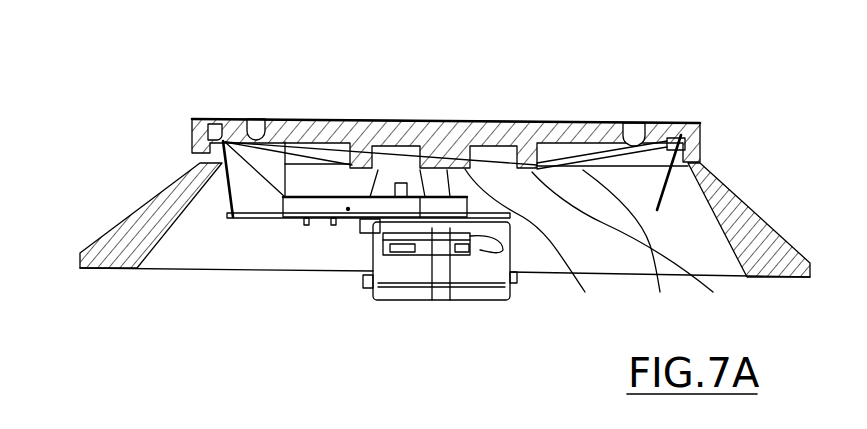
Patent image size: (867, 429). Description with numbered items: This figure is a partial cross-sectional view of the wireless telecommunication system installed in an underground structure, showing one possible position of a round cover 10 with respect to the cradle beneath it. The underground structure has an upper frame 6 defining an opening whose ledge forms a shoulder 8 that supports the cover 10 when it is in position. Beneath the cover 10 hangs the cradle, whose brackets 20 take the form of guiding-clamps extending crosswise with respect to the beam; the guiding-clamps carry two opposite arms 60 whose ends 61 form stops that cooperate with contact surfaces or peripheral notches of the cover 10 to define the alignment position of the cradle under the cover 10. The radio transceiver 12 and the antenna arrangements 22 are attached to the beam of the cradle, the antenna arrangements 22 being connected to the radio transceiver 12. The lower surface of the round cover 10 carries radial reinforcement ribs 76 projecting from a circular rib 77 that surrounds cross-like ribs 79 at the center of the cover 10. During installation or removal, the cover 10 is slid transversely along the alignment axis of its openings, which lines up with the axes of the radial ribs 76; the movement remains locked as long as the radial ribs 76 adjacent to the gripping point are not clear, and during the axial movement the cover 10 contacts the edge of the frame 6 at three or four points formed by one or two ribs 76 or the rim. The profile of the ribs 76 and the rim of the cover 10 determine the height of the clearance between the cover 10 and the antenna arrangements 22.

The cover 10 is at (323, 112).
The upper frame 6 is at (208, 130).
The shoulder 8 is at (215, 145).
The arms 60 is at (252, 206).
The ends 61 is at (693, 140).
The antenna arrangements 22 is at (293, 209).
The brackets 20 is at (347, 242).
The radio transceiver 12 is at (469, 313).
The cross-like ribs 79 is at (537, 244).
The circular rib 77 is at (636, 244).
The radial reinforcement ribs 76 is at (636, 245).